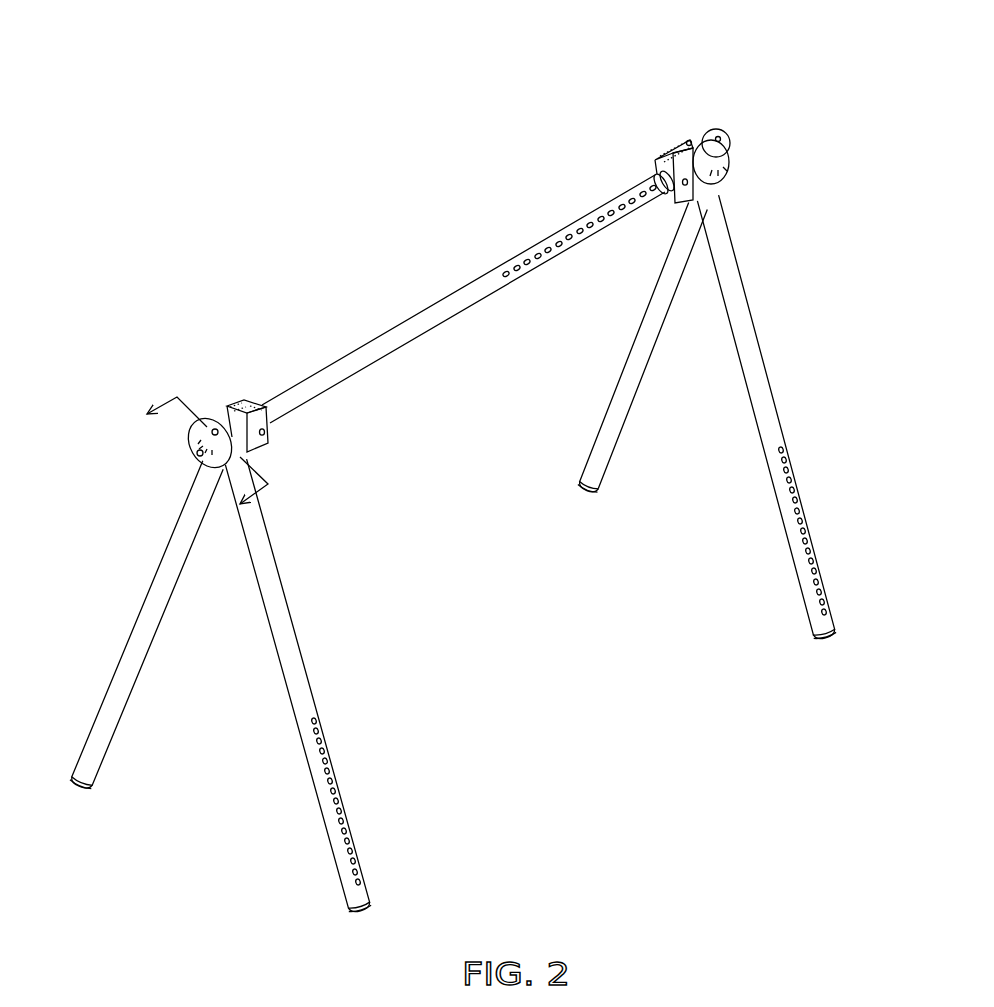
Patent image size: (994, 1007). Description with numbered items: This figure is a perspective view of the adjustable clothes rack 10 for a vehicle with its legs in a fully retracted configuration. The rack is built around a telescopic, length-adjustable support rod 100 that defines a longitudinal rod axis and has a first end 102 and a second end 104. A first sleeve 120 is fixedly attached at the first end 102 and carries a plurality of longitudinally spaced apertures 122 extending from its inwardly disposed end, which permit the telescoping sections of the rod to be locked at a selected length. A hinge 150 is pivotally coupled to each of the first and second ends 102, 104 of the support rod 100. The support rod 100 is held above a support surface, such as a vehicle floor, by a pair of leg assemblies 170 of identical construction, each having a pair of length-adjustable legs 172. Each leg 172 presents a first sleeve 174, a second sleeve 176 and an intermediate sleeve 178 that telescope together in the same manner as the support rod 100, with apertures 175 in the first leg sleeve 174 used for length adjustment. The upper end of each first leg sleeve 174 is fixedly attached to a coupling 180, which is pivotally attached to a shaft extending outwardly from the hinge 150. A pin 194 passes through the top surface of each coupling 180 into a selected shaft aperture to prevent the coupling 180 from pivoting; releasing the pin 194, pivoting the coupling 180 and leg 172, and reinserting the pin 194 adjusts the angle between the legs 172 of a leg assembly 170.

The adjustable clothes rack 10 is at (318, 140).
The support rod 100 is at (428, 428).
The first end 102 is at (253, 398).
The second end 104 is at (655, 172).
The first sleeve 120 is at (357, 347).
The apertures 122 is at (550, 252).
The hinge 150 is at (270, 428).
The leg assembly 170 is at (140, 509).
The leg 172 is at (785, 285).
The first leg sleeve 174 is at (766, 357).
The apertures 175 is at (793, 483).
The second leg sleeve 176 is at (819, 641).
The intermediate leg sleeve 178 is at (818, 632).
The coupling 180 is at (195, 441).
The pin 194 is at (724, 146).